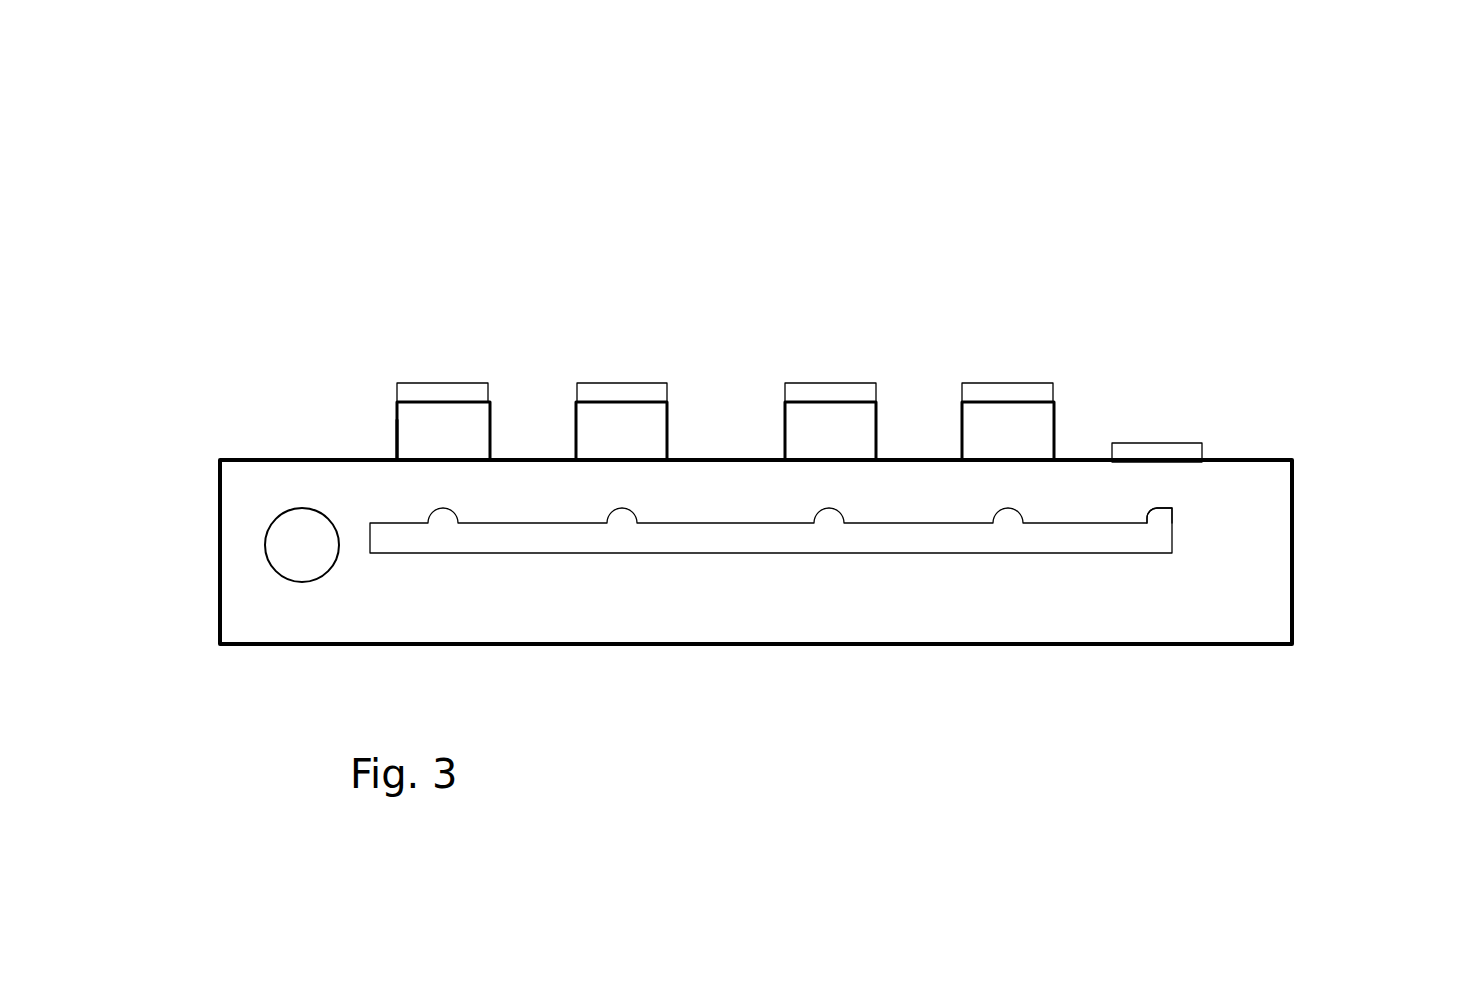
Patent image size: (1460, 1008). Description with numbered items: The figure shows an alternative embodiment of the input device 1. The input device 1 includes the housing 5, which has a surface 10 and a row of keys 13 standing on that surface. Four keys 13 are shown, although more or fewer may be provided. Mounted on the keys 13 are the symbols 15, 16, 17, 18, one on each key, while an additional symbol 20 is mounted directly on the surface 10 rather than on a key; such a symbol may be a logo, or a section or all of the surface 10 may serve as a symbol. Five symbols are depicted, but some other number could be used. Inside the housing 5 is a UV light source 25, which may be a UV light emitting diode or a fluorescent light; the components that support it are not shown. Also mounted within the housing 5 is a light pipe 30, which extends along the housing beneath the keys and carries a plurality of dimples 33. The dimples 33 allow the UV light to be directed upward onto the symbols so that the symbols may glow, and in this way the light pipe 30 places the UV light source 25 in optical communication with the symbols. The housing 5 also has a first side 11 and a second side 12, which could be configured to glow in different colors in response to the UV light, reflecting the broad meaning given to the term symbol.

The input device 1 is at (1107, 692).
The housing 5 is at (857, 647).
The surface 10 is at (695, 452).
The first side 11 is at (212, 516).
The second side 12 is at (1310, 585).
The keys 13 is at (398, 430).
The symbol 15 is at (445, 383).
The symbol 16 is at (622, 383).
The symbol 17 is at (830, 383).
The symbol 18 is at (1007, 383).
The symbol 20 is at (1155, 443).
The UV light source 25 is at (263, 547).
The light pipe 30 is at (753, 553).
The dimples 33 is at (1153, 507).